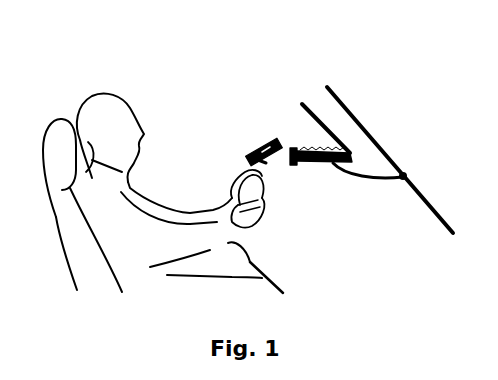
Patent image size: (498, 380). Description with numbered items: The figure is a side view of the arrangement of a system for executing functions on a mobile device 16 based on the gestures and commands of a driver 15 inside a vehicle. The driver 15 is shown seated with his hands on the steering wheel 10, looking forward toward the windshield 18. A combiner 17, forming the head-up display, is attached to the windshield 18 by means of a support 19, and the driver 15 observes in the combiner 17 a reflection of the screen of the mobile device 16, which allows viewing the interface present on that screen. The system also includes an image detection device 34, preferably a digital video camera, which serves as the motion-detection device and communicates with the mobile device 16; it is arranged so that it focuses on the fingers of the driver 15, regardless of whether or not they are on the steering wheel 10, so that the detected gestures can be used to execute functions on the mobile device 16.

The steering wheel 10 is at (263, 174).
The driver 15 is at (101, 94).
The mobile device 16 is at (276, 133).
The combiner 17 is at (302, 104).
The windshield 18 is at (327, 88).
The support 19 is at (377, 188).
The image detection device 34 is at (250, 148).